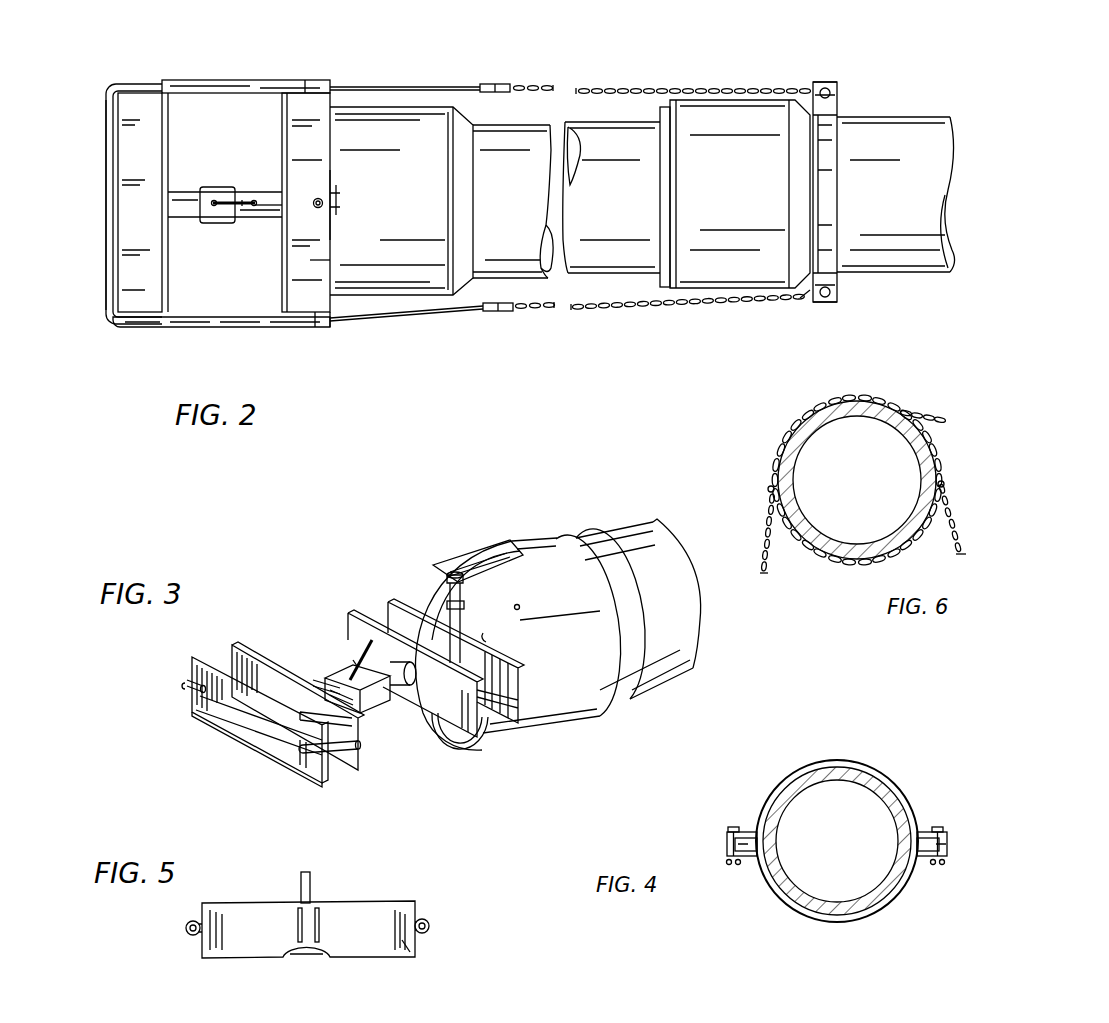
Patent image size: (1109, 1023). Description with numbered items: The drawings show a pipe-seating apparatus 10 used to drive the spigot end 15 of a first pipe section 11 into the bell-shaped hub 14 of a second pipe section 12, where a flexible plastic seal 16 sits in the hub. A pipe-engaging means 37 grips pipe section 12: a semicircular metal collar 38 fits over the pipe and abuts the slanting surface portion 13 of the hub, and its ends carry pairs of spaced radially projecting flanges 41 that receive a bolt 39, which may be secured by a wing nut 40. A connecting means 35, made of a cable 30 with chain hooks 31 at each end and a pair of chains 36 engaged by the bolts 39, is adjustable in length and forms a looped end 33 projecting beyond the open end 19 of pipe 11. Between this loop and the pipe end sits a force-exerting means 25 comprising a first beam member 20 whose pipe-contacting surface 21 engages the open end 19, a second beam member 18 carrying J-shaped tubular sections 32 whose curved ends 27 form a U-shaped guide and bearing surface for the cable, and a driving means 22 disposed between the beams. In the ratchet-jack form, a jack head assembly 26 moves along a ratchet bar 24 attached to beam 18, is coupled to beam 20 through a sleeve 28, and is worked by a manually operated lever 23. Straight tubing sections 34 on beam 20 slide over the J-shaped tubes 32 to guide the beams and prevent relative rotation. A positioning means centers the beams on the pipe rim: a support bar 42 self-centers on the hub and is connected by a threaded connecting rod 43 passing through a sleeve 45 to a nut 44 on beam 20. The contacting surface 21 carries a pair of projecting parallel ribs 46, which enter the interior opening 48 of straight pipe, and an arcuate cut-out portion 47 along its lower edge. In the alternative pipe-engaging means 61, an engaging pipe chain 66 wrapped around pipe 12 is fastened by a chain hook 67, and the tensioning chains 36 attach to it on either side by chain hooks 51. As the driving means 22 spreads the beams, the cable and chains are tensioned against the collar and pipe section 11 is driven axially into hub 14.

In FIG. 2, the pipe-seating apparatus 10 is at (276, 33).
In FIG. 3, the pipe-seating apparatus 10 is at (250, 578).
In FIG. 2, the first pipe section 11 is at (526, 123).
In FIG. 3, the first pipe section 11 is at (636, 527).
In FIG. 2, the second pipe section 12 is at (905, 115).
In FIG. 6, the second pipe section 12 is at (845, 548).
In FIG. 4, the second pipe section 12 is at (855, 918).
In FIG. 2, the slanting surface portion 13 is at (800, 298).
In FIG. 2, the bell-shaped hub 14 is at (430, 105).
In FIG. 3, the bell-shaped hub 14 is at (540, 537).
In FIG. 2, the spigot end 15 is at (646, 120).
In FIG. 2, the flexible plastic seal 16 is at (666, 105).
In FIG. 2, the second beam member 18 is at (125, 330).
In FIG. 3, the second beam member 18 is at (250, 722).
In FIG. 2, the open end 19 is at (336, 312).
In FIG. 3, the open end 19 is at (505, 737).
In FIG. 2, the first beam member 20 is at (292, 112).
In FIG. 3, the first beam member 20 is at (488, 752).
In FIG. 5, the first beam member 20 is at (402, 905).
In FIG. 2, the pipe-contacting surface 21 is at (333, 176).
In FIG. 3, the pipe-contacting surface 21 is at (540, 722).
In FIG. 5, the pipe-contacting surface 21 is at (405, 950).
In FIG. 2, the driving means 22 is at (216, 234).
In FIG. 3, the driving means 22 is at (382, 723).
In FIG. 2, the manually operated lever 23 is at (246, 200).
In FIG. 3, the manually operated lever 23 is at (352, 610).
In FIG. 2, the ratchet bar 24 is at (176, 190).
In FIG. 3, the ratchet bar 24 is at (312, 678).
In FIG. 2, the force-exerting means 25 is at (199, 72).
In FIG. 3, the force-exerting means 25 is at (451, 753).
In FIG. 2, the jack head assembly 26 is at (208, 186).
In FIG. 3, the jack head assembly 26 is at (355, 640).
In FIG. 2, the curved ends 27 is at (112, 86).
In FIG. 3, the curved ends 27 is at (184, 685).
In FIG. 2, the sleeve 28 is at (270, 192).
In FIG. 3, the sleeve 28 is at (403, 686).
In FIG. 2, the cable 30 is at (365, 85).
In FIG. 2, the chain hooks 31 is at (496, 83).
In FIG. 2, the J-shaped tubular sections 32 is at (140, 90).
In FIG. 3, the J-shaped tubular sections 32 is at (222, 656).
In FIG. 2, the looped end 33 is at (105, 156).
In FIG. 3, the looped end 33 is at (235, 717).
In FIG. 2, the straight tubing sections 34 is at (310, 80).
In FIG. 3, the straight tubing sections 34 is at (318, 642).
In FIG. 5, the straight tubing sections 34 is at (185, 928).
In FIG. 2, the connecting means 35 is at (519, 338).
In FIG. 2, the chains 36 is at (595, 88).
In FIG. 6, the chains 36 is at (764, 545).
In FIG. 4, the chains 36 is at (728, 848).
In FIG. 2, the pipe-engaging means 37 is at (852, 169).
In FIG. 4, the pipe-engaging means 37 is at (889, 764).
In FIG. 2, the semicircular metal collar 38 is at (832, 200).
In FIG. 4, the semicircular metal collar 38 is at (840, 759).
In FIG. 2, the bolt 39 is at (825, 86).
In FIG. 4, the bolt 39 is at (730, 826).
In FIG. 4, the wing nut 40 is at (732, 866).
In FIG. 2, the radially projecting flanges 41 is at (838, 96).
In FIG. 4, the radially projecting flanges 41 is at (748, 830).
In FIG. 3, the support bar 42 is at (483, 556).
In FIG. 2, the connecting rod 43 is at (314, 206).
In FIG. 3, the connecting rod 43 is at (450, 574).
In FIG. 3, the nut 44 is at (465, 604).
In FIG. 2, the sleeve 45 is at (342, 208).
In FIG. 3, the sleeve 45 is at (520, 608).
In FIG. 5, the sleeve 45 is at (311, 885).
In FIG. 2, the projecting parallel ribs 46 is at (342, 193).
In FIG. 5, the projecting parallel ribs 46 is at (298, 920).
In FIG. 5, the arcuate cut-out portion 47 is at (308, 950).
In FIG. 2, the interior opening 48 is at (300, 262).
In FIG. 3, the interior opening 48 is at (490, 641).
In FIG. 6, the chain hooks 51 is at (768, 492).
In FIG. 6, the pipe-engaging means 61 is at (779, 423).
In FIG. 6, the engaging pipe chain 66 is at (860, 394).
In FIG. 6, the chain hook 67 is at (920, 408).